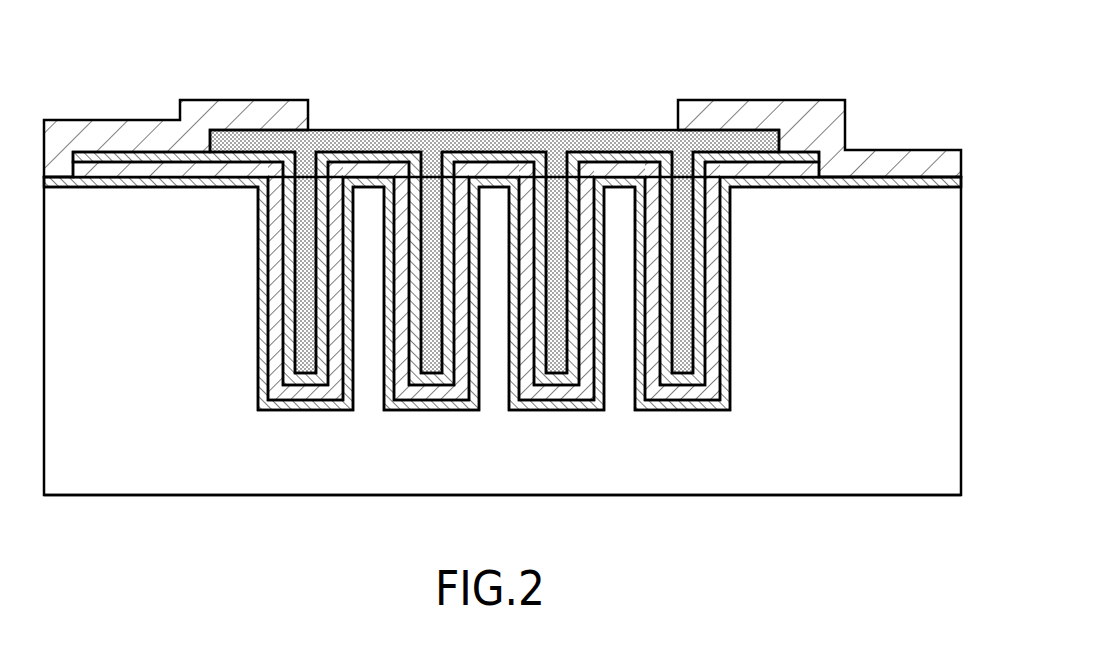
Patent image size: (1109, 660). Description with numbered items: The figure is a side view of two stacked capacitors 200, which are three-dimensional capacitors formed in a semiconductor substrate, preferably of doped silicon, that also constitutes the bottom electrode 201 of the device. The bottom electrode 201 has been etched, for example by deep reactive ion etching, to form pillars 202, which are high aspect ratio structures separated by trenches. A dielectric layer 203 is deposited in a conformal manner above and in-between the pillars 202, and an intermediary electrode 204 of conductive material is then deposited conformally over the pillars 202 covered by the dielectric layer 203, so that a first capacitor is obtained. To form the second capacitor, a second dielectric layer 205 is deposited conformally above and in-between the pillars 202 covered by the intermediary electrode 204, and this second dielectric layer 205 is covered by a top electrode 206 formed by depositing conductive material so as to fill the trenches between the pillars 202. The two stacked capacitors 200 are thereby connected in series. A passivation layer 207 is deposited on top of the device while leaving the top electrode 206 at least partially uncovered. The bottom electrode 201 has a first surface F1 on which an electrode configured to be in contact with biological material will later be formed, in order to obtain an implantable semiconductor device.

The stacked capacitors 200 is at (744, 267).
The bottom electrode 201 is at (900, 480).
The pillars 202 is at (616, 410).
The dielectric layer 203 is at (258, 250).
The intermediary electrode 204 is at (277, 297).
The second dielectric layer 205 is at (292, 345).
The top electrode 206 is at (392, 131).
The passivation layer 207 is at (728, 99).
The first surface F1 is at (788, 496).